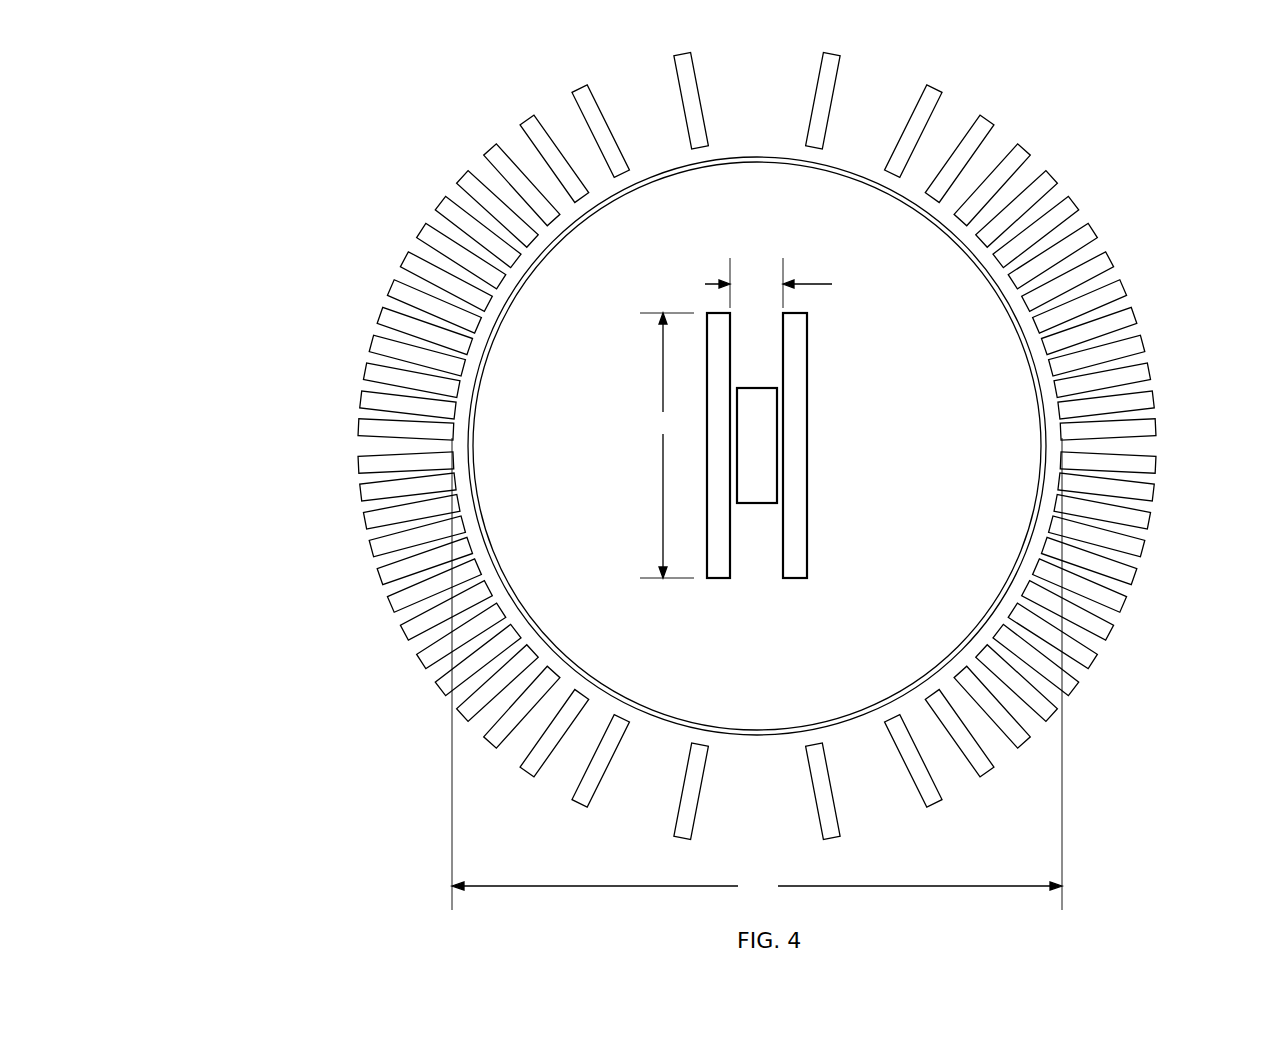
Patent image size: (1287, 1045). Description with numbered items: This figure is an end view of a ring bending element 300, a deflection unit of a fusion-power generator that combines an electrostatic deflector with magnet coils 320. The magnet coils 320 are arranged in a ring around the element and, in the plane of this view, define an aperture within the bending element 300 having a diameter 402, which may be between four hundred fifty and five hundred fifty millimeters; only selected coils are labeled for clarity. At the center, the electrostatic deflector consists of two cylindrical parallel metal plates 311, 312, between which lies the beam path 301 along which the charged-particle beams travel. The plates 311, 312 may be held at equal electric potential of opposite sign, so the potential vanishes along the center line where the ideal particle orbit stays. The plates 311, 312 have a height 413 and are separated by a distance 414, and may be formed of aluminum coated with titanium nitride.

The ring bending element 300 is at (277, 191).
The magnet coils 320 is at (675, 66).
The metal plate 311 is at (707, 313).
The metal plate 312 is at (800, 313).
The beam path 301 is at (763, 503).
The height 413 is at (667, 445).
The distance 414 is at (768, 282).
The diameter 402 is at (757, 674).